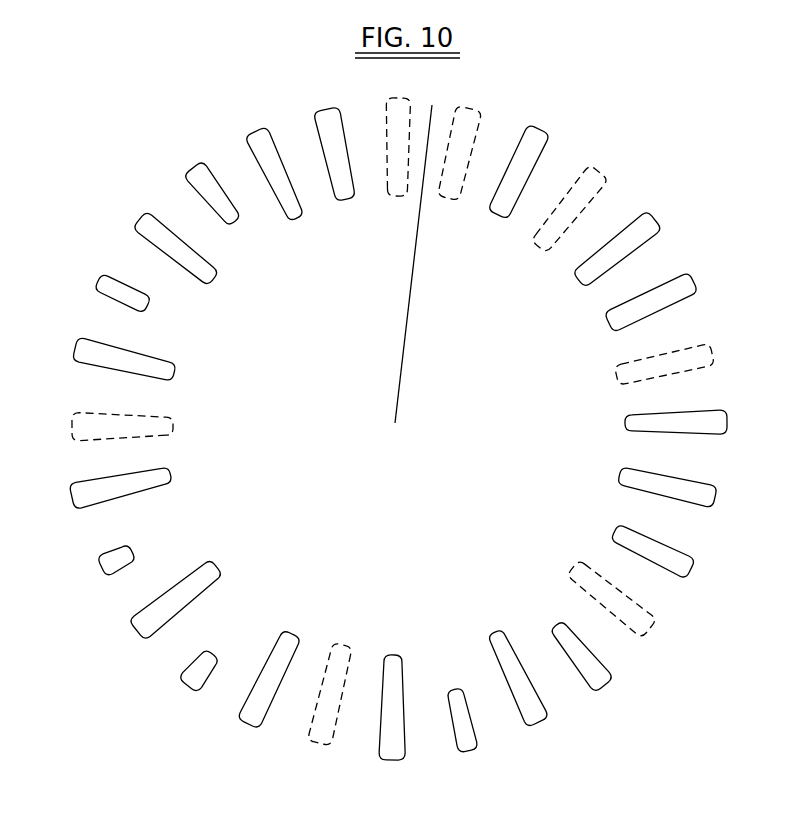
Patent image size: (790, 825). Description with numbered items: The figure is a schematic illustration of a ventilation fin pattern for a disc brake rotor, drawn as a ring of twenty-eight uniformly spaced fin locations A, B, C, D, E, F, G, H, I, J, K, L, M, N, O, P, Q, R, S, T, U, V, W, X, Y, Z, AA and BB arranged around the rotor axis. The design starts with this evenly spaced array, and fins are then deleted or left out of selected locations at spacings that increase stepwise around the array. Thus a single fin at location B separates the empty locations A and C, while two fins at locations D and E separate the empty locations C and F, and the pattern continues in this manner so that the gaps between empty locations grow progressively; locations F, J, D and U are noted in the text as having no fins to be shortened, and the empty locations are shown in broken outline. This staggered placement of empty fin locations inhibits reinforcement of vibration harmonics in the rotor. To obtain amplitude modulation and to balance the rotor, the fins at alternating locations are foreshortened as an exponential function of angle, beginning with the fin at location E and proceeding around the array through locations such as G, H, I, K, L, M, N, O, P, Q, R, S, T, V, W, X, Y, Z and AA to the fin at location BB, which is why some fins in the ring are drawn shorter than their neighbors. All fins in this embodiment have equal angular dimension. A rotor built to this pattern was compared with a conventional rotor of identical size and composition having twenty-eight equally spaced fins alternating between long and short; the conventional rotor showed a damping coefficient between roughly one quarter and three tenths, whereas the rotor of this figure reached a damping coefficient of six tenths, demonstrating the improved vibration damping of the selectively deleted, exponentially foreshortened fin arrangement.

The fin location A is at (459, 138).
The fin location B is at (523, 163).
The fin location C is at (576, 203).
The fin location D is at (627, 246).
The fin location E is at (663, 301).
The fin location F is at (675, 364).
The fin location G is at (689, 422).
The fin location H is at (680, 489).
The fin location I is at (658, 553).
The fin location J is at (618, 606).
The fin location K is at (584, 665).
The fin location L is at (516, 690).
The fin location M is at (461, 732).
The fin location N is at (392, 720).
The fin location O is at (331, 709).
The fin location P is at (270, 692).
The fin location Q is at (198, 684).
The fin location R is at (171, 605).
The fin location S is at (107, 562).
The fin location T is at (112, 485).
The fin location U is at (111, 426).
The fin location V is at (116, 360).
The fin location W is at (114, 293).
The fin location X is at (168, 245).
The fin location Y is at (212, 187).
The fin location Z is at (276, 164).
The fin location AA is at (335, 139).
The fin location BB is at (399, 133).